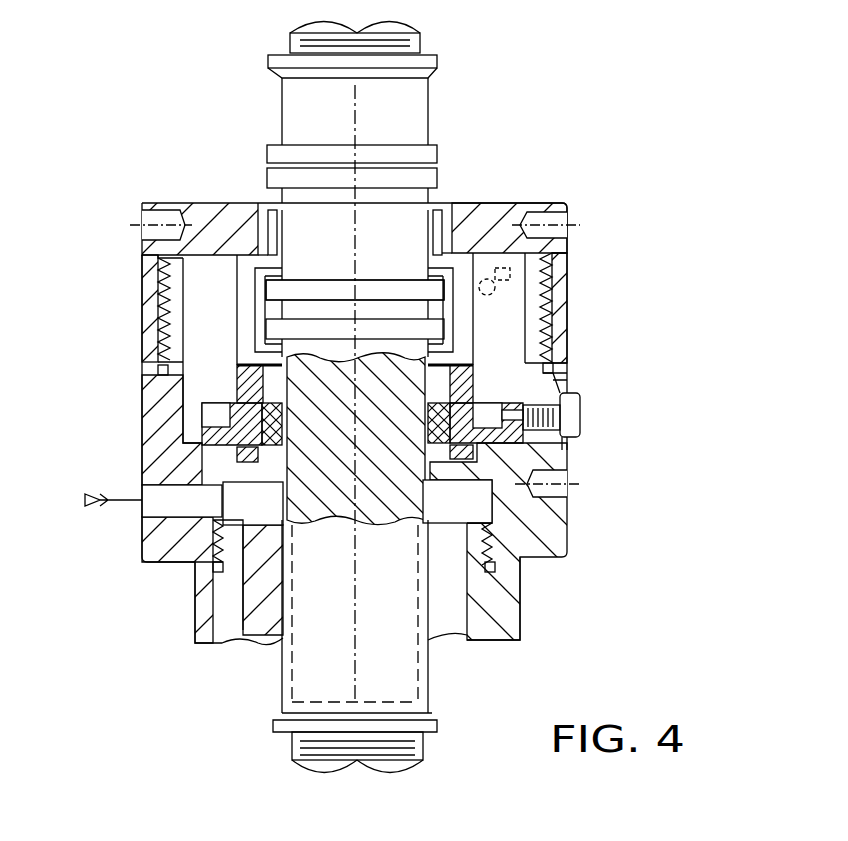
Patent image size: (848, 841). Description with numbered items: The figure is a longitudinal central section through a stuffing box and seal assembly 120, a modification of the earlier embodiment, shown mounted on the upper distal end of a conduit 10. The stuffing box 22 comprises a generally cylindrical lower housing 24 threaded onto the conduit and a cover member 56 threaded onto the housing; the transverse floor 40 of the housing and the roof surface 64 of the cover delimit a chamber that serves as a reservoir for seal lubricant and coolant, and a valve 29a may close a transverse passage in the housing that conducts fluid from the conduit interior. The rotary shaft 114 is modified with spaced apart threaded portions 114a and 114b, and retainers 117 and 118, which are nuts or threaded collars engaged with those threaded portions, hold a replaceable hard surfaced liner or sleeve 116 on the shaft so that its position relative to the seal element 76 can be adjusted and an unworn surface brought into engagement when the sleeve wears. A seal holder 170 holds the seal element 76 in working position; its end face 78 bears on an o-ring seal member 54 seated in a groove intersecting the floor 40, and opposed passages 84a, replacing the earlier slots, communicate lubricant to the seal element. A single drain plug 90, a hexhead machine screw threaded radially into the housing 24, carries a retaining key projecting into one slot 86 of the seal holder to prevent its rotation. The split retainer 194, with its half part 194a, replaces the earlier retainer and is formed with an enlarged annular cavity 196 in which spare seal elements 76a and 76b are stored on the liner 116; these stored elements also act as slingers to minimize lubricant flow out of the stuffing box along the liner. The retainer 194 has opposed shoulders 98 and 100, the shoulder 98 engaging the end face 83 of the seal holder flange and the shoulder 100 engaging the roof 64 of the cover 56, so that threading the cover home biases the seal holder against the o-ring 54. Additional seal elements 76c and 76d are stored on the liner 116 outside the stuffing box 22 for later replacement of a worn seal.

The upper distal end of conduit 10 is at (522, 602).
The stuffing box 22 is at (568, 256).
The lower housing 24 is at (142, 562).
The valve 29a is at (92, 512).
The floor 40 is at (182, 501).
The o-ring seal member 54 is at (253, 503).
The cover member 56 is at (200, 206).
The roof surface 64 is at (162, 265).
The seal element 76 is at (225, 440).
The spare seal element 76a is at (266, 329).
The spare seal element 76b is at (266, 290).
The additional seal element 76c is at (268, 174).
The additional seal element 76d is at (436, 147).
The end face of seal holder 78 is at (240, 455).
The end face of flange 83 is at (462, 363).
The passages 84a is at (237, 372).
The slot 86 is at (560, 450).
The drain plug 90 is at (581, 428).
The shoulder 98 is at (452, 388).
The shoulder 100 is at (256, 247).
The rotary shaft 114 is at (290, 38).
The threaded portion 114a is at (422, 38).
The threaded portion 114b is at (292, 748).
The liner or sleeve 116 is at (444, 220).
The retainer 117 is at (436, 70).
The retainer 118 is at (437, 727).
The stuffing box and seal assembly 120 is at (562, 152).
The seal holder 170 is at (548, 370).
The retainer 194 is at (498, 313).
The retainer half part 194a is at (548, 318).
The annular cavity 196 is at (425, 308).